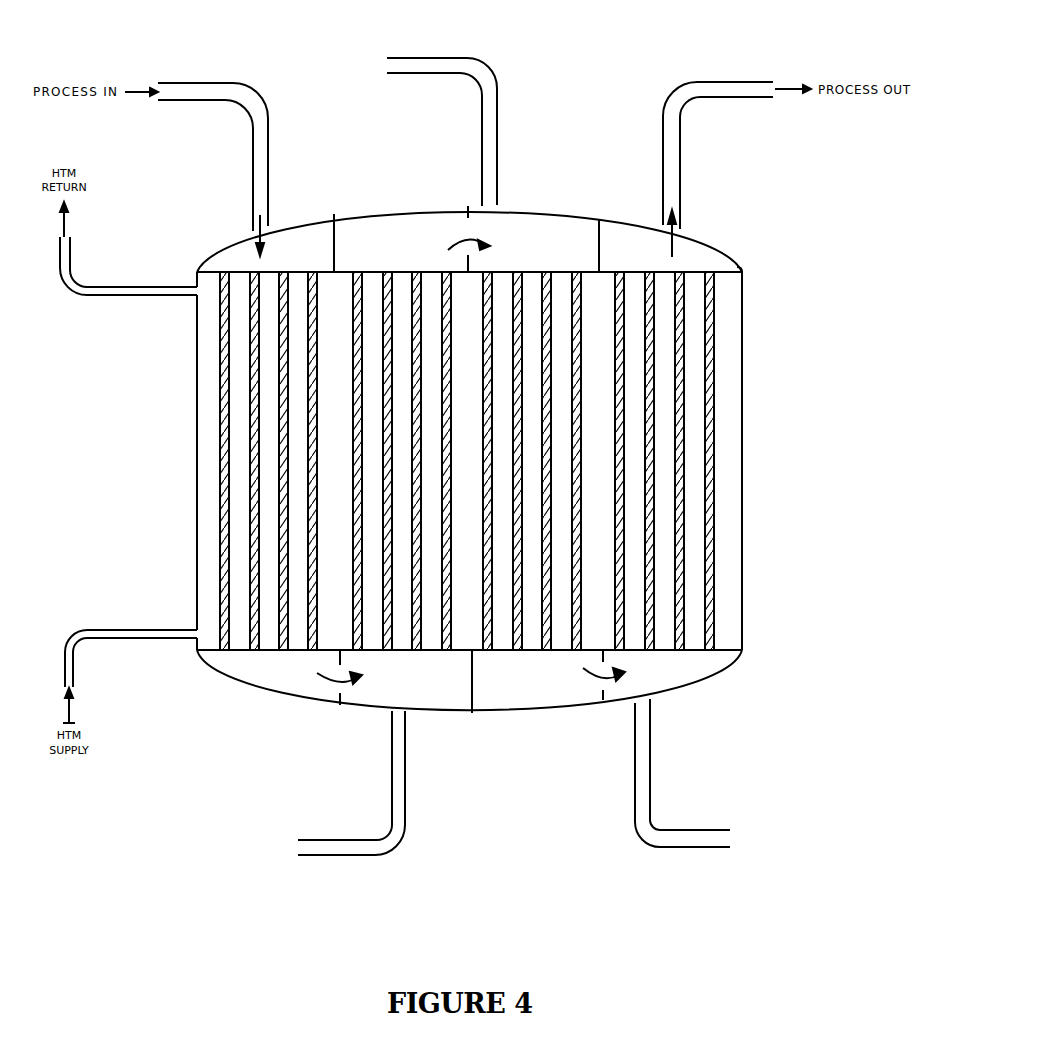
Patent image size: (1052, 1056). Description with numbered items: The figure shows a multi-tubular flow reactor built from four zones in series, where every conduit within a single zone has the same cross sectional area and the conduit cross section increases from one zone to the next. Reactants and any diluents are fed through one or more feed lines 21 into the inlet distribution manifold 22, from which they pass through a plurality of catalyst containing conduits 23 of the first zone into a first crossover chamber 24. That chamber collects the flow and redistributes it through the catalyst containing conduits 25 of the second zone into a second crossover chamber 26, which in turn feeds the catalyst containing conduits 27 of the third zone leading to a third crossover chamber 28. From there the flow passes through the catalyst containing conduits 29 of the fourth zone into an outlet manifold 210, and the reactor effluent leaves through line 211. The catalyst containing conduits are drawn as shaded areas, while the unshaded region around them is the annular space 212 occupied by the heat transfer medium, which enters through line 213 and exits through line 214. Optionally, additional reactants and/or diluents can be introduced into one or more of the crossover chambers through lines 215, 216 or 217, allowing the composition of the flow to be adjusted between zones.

The feed line 21 is at (239, 84).
The inlet distribution manifold 22 is at (303, 237).
The catalyst containing conduits 23 is at (222, 508).
The first crossover chamber 24 is at (297, 685).
The catalyst containing conduits 25 is at (418, 637).
The second crossover chamber 26 is at (430, 220).
The catalyst containing conduits 27 is at (543, 280).
The third crossover chamber 28 is at (553, 698).
The catalyst containing conduits 29 is at (710, 473).
The outlet manifold 210 is at (707, 251).
The line 211 is at (747, 80).
The annular space 212 is at (203, 412).
The line 213 is at (138, 648).
The line 214 is at (125, 284).
The line 215 is at (485, 58).
The line 216 is at (346, 865).
The line 217 is at (658, 772).